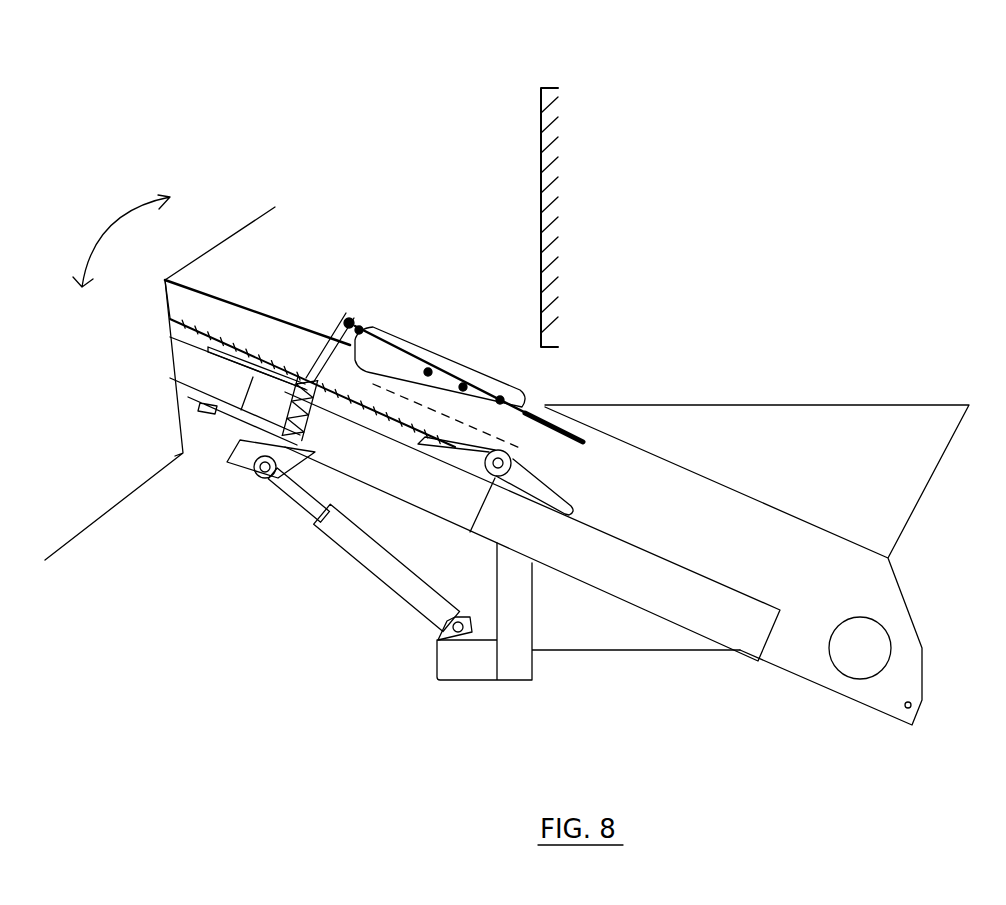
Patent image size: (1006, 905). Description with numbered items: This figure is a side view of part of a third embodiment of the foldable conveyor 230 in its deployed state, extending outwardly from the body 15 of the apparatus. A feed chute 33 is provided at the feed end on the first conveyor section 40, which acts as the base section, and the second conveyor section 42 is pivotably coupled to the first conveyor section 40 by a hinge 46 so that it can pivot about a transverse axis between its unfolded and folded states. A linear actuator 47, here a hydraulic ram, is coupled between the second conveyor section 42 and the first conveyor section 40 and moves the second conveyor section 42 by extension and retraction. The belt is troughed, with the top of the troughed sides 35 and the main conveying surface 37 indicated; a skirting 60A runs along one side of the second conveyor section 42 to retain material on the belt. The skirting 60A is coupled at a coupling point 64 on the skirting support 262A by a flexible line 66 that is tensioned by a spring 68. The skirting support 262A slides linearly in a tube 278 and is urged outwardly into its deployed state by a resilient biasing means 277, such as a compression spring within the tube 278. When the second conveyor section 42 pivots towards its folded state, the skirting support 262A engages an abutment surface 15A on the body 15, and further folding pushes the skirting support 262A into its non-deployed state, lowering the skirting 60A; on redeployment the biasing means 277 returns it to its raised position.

The foldable conveyor 230 is at (367, 91).
The body 15 is at (540, 120).
The abutment surface 15A is at (540, 187).
The top of the troughed sides 35 is at (221, 282).
The main conveying surface 37 is at (170, 318).
The skirting support 262A is at (333, 337).
The coupling point 64 is at (350, 316).
The tube 278 is at (316, 425).
The spring 68 is at (573, 430).
The flexible line 66 is at (457, 368).
The skirting 60A is at (492, 385).
The feed chute 33 is at (903, 488).
The first conveyor section 40 is at (808, 665).
The second conveyor section 42 is at (452, 503).
The hinge 46 is at (508, 470).
The linear actuator 47 is at (352, 545).
The resilient biasing means 277 is at (300, 442).